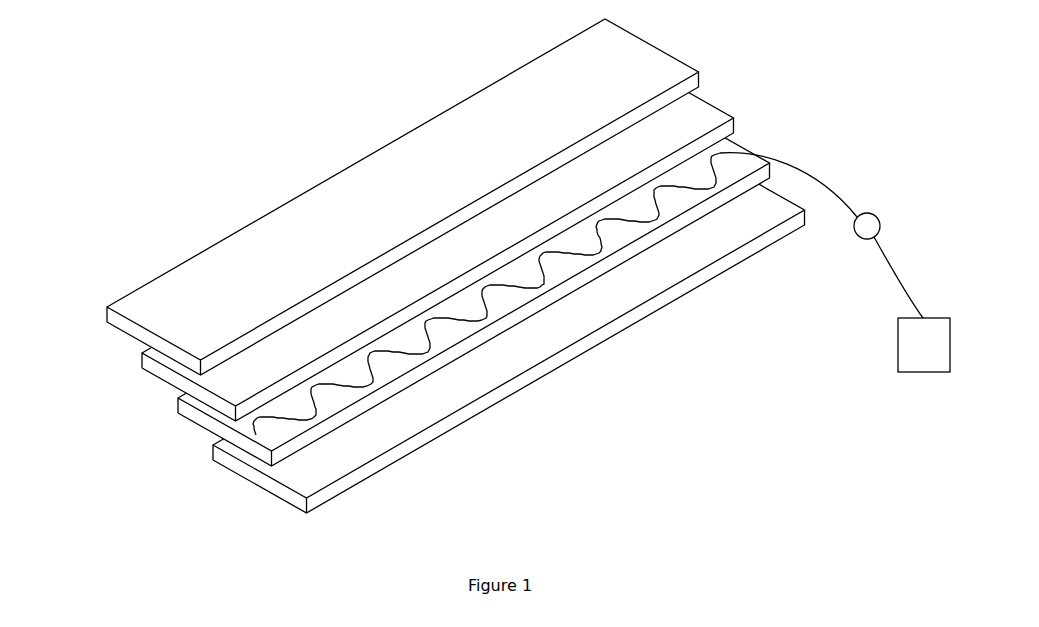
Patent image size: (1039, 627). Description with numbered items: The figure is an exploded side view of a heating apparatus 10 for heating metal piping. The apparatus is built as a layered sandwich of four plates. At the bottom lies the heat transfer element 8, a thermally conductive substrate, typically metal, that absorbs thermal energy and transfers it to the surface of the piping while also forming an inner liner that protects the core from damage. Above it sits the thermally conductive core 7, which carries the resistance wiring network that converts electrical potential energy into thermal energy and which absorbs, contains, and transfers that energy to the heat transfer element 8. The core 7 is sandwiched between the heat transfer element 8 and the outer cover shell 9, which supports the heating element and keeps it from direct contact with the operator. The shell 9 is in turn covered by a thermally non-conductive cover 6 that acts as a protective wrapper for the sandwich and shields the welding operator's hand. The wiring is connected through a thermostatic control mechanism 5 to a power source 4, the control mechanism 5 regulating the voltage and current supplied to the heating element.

The power source 4 is at (910, 358).
The thermostatic control mechanism 5 is at (878, 217).
The thermally non-conductive cover 6 is at (153, 298).
The thermally conductive core 7 is at (740, 163).
The heat transfer element 8 is at (310, 478).
The outer cover shell 9 is at (213, 375).
The heating apparatus 10 is at (419, 275).